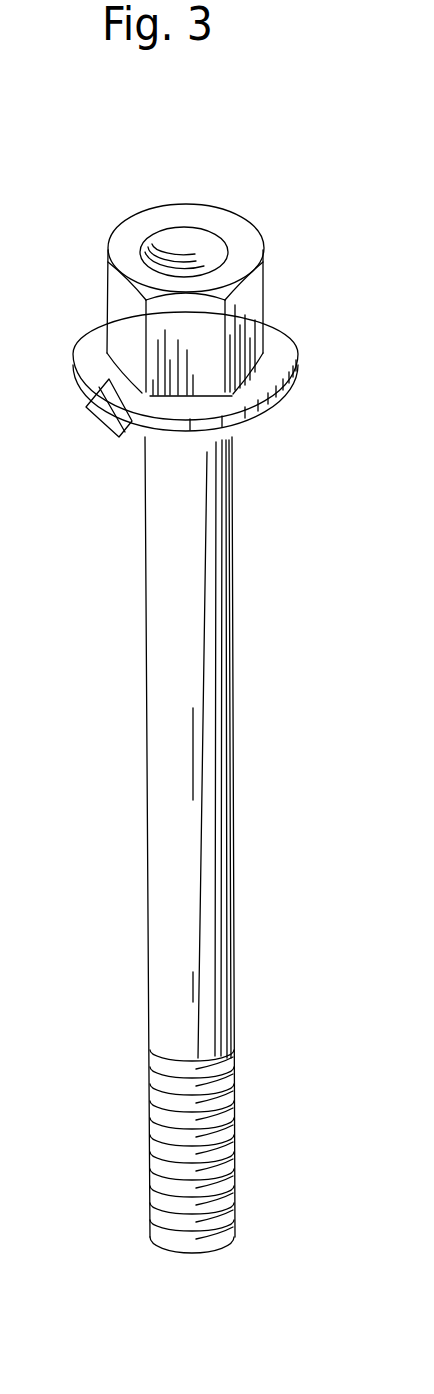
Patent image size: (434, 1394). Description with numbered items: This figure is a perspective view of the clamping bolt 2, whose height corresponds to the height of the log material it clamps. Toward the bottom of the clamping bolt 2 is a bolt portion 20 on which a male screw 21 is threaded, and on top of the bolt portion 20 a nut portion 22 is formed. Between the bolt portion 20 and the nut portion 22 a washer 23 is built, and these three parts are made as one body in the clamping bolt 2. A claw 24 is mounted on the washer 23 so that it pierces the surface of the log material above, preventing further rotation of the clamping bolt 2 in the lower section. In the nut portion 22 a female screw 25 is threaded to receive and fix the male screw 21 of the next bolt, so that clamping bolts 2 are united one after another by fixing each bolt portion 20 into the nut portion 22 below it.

The clamping bolt 2 is at (193, 706).
The bolt portion 20 is at (170, 798).
The male screw 21 is at (237, 1120).
The nut portion 22 is at (250, 278).
The washer 23 is at (260, 385).
The claw 24 is at (100, 412).
The female screw 25 is at (208, 240).